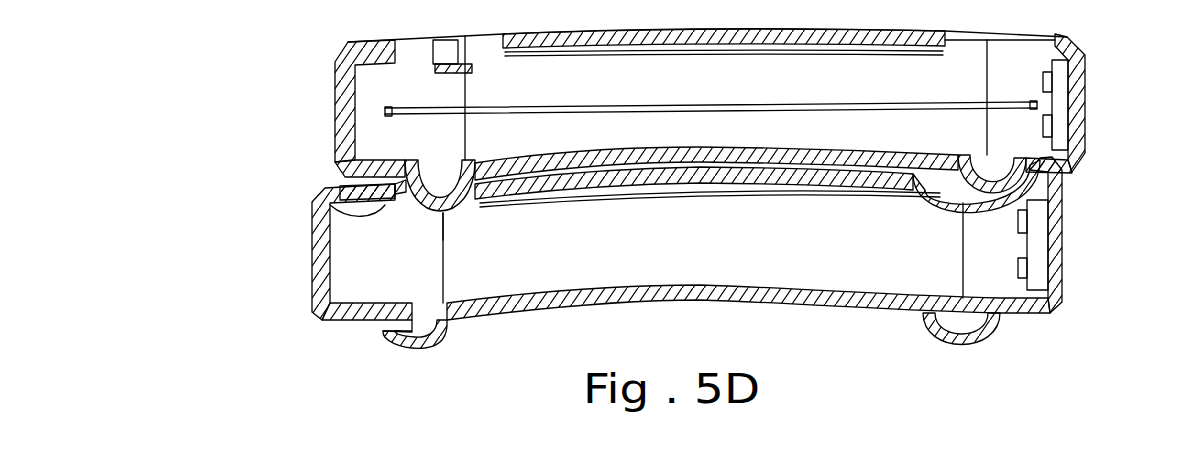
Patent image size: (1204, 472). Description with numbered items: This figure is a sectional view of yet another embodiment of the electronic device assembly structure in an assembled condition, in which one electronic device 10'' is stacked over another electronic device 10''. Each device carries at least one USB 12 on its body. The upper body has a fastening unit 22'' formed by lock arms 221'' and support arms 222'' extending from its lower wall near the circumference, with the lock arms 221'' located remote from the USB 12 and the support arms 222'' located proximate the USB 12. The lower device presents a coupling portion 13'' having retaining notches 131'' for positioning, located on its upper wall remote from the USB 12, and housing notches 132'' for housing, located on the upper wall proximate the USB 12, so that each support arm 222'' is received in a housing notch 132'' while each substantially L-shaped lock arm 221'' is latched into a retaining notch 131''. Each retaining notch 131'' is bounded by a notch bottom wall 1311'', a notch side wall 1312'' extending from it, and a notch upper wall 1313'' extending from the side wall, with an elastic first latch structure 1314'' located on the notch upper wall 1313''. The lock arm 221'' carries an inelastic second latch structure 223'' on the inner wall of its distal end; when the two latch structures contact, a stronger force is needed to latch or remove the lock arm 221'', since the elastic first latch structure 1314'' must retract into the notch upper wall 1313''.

The electronic device 10'' is at (754, 174).
The USB 12 is at (1052, 128).
The support arm 222'' is at (1026, 241).
The fastening unit 22'' is at (1043, 341).
The housing notch 132'' is at (910, 209).
The coupling portion 13'' is at (976, 186).
The retaining notch 131'' is at (306, 212).
The notch bottom wall 1311'' is at (327, 246).
The notch side wall 1312'' is at (299, 224).
The notch upper wall 1313'' is at (343, 178).
The elastic first latch structure 1314'' is at (303, 193).
The lock arm 221'' is at (387, 359).
The inelastic second latch structure 223'' is at (346, 346).